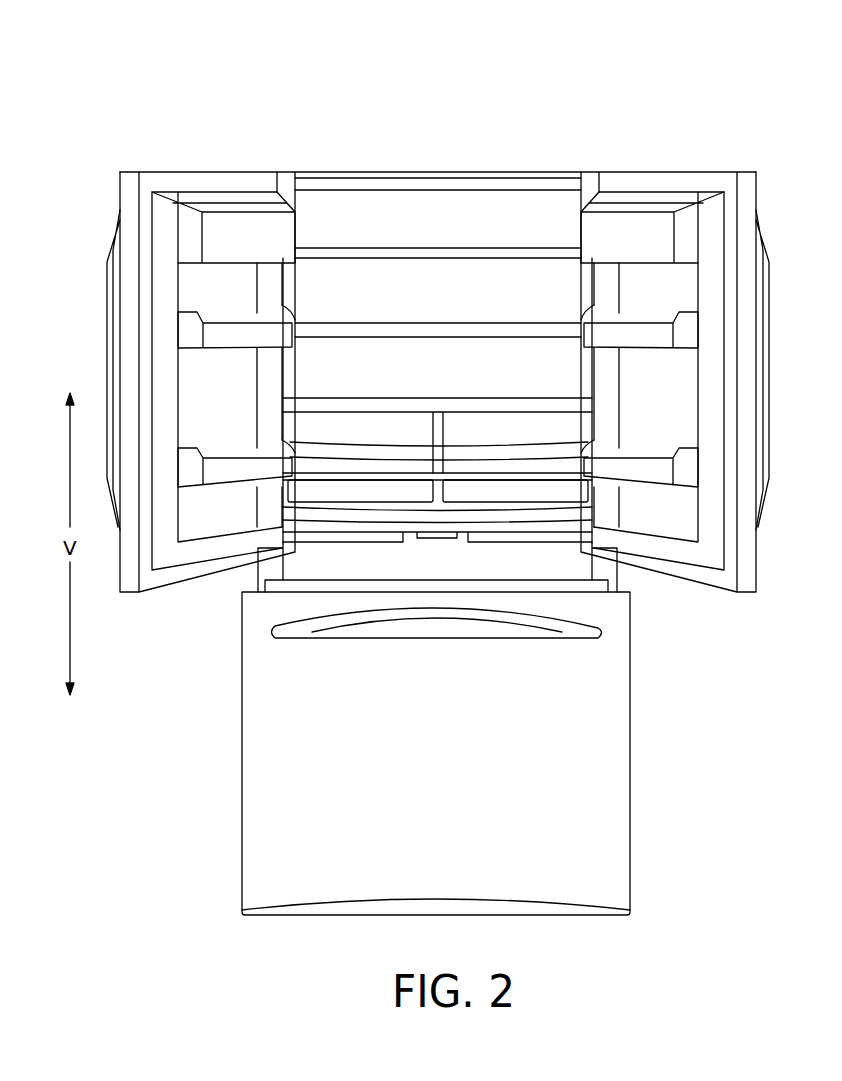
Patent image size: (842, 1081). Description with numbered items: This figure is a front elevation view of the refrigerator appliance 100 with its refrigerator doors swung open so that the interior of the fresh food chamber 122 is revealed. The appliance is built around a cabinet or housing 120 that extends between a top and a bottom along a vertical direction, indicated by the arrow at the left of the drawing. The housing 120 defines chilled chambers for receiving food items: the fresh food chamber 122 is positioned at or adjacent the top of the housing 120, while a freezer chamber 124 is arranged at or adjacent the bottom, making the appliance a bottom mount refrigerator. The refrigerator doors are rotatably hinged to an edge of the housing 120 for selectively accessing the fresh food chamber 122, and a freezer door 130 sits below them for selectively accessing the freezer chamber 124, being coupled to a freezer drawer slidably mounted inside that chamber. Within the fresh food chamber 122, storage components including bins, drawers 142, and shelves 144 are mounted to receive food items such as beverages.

The refrigerator appliance 100 is at (603, 97).
The housing 120 is at (618, 578).
The fresh food chamber 122 is at (437, 215).
The freezer chamber 124 is at (565, 790).
The freezer door 130 is at (283, 770).
The drawers 142 is at (470, 452).
The shelves 144 is at (450, 258).